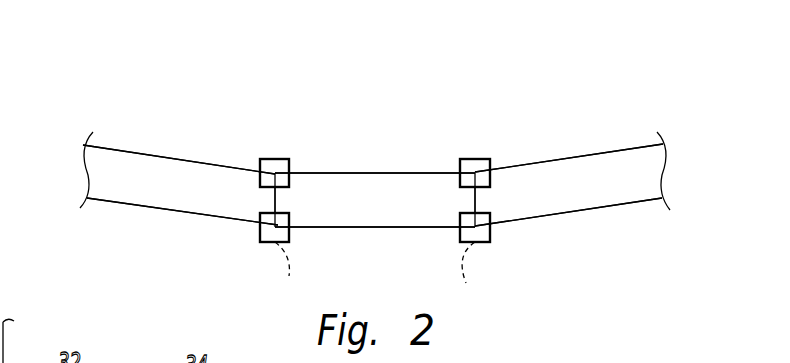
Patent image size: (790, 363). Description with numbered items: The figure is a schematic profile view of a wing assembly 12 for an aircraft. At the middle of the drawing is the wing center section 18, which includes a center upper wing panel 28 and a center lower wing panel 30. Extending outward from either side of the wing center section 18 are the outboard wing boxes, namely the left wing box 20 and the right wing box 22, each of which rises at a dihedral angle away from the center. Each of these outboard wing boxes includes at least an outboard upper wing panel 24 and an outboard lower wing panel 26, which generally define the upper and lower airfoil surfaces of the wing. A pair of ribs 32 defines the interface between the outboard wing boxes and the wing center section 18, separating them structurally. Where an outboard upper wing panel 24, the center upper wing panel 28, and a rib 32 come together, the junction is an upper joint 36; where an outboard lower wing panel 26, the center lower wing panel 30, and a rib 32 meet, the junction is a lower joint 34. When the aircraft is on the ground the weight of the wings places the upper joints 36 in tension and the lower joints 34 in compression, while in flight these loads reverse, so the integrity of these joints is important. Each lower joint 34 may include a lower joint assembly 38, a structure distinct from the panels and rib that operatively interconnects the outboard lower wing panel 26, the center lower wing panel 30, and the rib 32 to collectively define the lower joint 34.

The wing assembly 12 is at (570, 66).
The wing center section 18 is at (407, 166).
The left wing box 20 is at (135, 144).
The right wing box 22 is at (575, 150).
The outboard upper wing panel 24 is at (175, 157).
The outboard lower wing panel 26 is at (138, 205).
The center upper wing panel 28 is at (366, 172).
The center lower wing panel 30 is at (322, 227).
The rib 32 is at (275, 199).
The lower joint 34 is at (262, 242).
The upper joint 36 is at (280, 158).
The lower joint assembly 38 is at (380, 274).